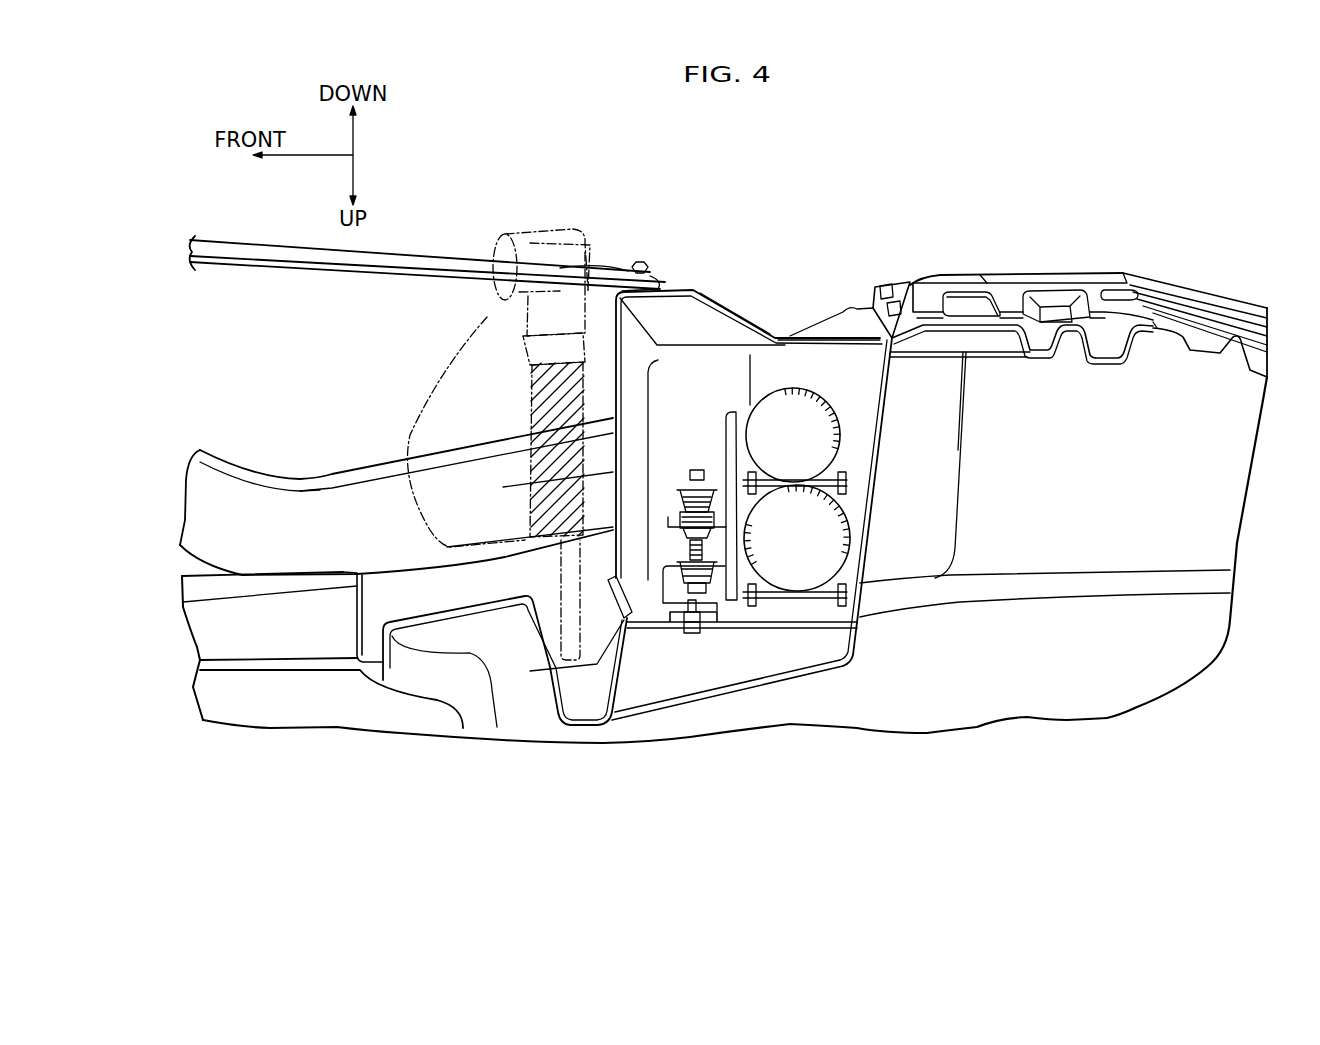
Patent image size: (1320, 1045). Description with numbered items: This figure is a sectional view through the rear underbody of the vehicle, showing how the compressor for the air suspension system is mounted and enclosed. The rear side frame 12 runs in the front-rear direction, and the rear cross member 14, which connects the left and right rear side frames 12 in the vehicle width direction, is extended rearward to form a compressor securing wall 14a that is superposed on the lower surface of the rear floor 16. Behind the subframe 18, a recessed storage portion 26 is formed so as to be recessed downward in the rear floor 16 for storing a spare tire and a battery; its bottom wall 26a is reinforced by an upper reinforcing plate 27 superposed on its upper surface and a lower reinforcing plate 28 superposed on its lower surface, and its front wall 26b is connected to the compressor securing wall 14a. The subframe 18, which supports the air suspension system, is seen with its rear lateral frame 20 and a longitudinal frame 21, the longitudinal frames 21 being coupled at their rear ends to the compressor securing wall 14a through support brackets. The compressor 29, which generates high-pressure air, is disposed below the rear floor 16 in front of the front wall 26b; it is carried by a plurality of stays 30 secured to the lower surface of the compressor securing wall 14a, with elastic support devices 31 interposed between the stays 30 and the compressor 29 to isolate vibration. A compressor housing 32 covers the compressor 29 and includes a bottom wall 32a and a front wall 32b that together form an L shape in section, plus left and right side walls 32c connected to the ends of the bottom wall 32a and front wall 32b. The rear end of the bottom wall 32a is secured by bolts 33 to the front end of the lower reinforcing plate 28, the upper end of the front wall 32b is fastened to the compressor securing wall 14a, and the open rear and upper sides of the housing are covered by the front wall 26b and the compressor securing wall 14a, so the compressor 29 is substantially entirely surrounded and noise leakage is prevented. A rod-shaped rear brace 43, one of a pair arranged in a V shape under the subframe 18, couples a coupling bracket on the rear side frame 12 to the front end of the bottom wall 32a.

The rear side frame 12 is at (257, 645).
The rear cross member 14 is at (463, 630).
The compressor securing wall 14a is at (760, 623).
The rear floor 16 is at (697, 710).
The subframe 18 is at (317, 466).
The rear lateral frame 20 is at (533, 402).
The longitudinal frame 21 is at (357, 497).
The recessed storage portion 26 is at (1102, 268).
The bottom wall 26a is at (1008, 332).
The front wall 26b is at (878, 483).
The upper reinforcing plate 27 is at (1148, 340).
The lower reinforcing plate 28 is at (1010, 295).
The compressor 29 is at (850, 428).
The stay 30 is at (668, 568).
The elastic support device 31 is at (672, 505).
The compressor housing 32 is at (737, 298).
The bottom wall 32a is at (757, 313).
The front wall 32b is at (530, 490).
The side wall 32c is at (718, 360).
The bolts 33 is at (893, 305).
The rear brace 43 is at (423, 258).